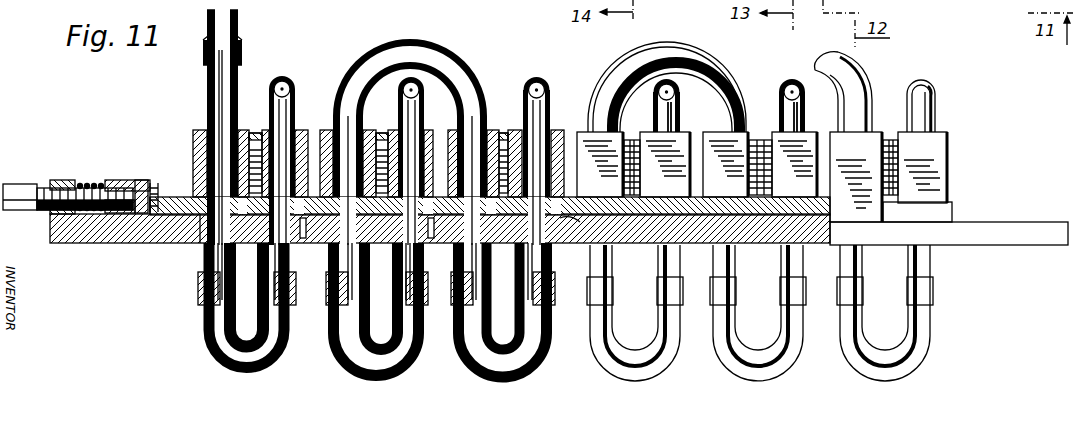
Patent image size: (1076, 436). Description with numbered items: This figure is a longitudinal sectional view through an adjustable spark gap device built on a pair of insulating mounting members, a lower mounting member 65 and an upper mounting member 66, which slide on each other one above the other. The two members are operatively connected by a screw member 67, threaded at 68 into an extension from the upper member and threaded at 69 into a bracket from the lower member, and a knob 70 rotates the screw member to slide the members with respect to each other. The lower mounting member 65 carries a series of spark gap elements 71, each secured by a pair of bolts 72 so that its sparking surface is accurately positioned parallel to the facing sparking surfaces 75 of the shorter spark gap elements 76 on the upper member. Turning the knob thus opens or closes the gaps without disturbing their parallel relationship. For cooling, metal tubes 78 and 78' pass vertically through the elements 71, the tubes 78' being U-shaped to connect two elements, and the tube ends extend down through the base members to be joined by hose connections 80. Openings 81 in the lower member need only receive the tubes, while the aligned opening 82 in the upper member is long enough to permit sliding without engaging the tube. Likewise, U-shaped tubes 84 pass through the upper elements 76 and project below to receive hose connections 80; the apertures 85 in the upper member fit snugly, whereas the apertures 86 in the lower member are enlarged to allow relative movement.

The lower mounting member 65 is at (1023, 241).
The upper mounting member 66 is at (175, 198).
The screw member 67 is at (98, 182).
The threaded portion 68 is at (122, 183).
The threaded portion 69 is at (68, 180).
The knob 70 is at (23, 182).
The spark gap elements 71 is at (200, 130).
The bolts 72 is at (600, 164).
The sparking surfaces 75 is at (258, 130).
The spark gap elements 76 is at (304, 130).
The metal tubes 78 is at (239, 127).
The U-shaped metal tubes 78' is at (539, 127).
The hose connections 80 is at (203, 323).
The openings 81 is at (203, 252).
The aligned opening 82 is at (198, 241).
The U-shaped tubes 84 is at (285, 84).
The apertures 85 is at (575, 223).
The apertures 86 is at (302, 238).